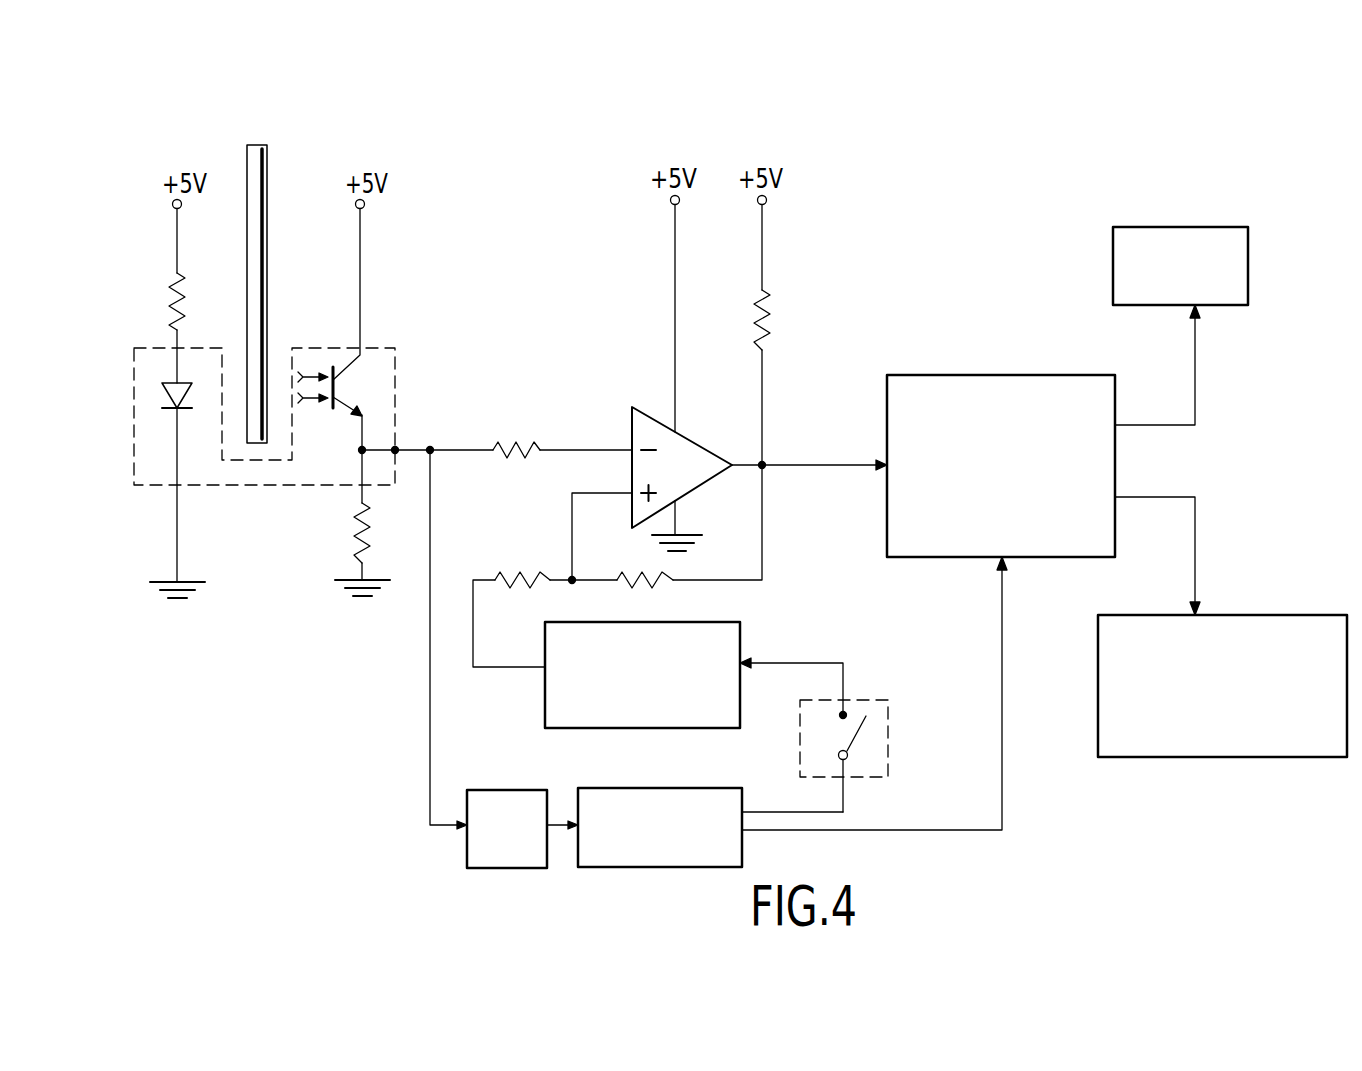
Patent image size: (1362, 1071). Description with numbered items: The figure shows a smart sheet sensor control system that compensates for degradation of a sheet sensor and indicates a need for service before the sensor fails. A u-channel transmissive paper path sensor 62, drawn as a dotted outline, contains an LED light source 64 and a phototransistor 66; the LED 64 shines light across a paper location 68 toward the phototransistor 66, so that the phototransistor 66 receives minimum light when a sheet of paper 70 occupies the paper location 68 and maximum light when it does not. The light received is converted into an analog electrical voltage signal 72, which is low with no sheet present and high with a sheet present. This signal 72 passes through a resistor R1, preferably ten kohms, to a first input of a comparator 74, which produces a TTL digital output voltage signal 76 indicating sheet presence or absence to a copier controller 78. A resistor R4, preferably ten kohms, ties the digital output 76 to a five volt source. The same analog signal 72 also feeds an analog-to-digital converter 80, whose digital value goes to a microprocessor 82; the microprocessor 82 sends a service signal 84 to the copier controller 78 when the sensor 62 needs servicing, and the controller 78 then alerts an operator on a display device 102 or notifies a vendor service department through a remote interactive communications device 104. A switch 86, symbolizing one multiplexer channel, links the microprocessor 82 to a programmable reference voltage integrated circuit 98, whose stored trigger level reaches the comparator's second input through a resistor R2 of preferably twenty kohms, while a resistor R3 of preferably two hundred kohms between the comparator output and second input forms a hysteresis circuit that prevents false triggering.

The u-channel transmissive paper path sensor 62 is at (160, 487).
The LED light source 64 is at (170, 397).
The phototransistor 66 is at (352, 385).
The paper location 68 is at (276, 352).
The sheet of paper 70 is at (260, 145).
The analog electrical voltage signal 72 is at (430, 448).
The comparator 74 is at (632, 412).
The digital output voltage signal 76 is at (763, 464).
The copier controller 78 is at (976, 375).
The analog-to-digital converter 80 is at (495, 868).
The microprocessor 82 is at (663, 868).
The service signal 84 is at (1002, 693).
The switch 86 is at (890, 745).
The programmable reference voltage I.C. 98 is at (740, 630).
The display device 102 is at (1172, 227).
The remote interactive communications device 104 is at (1265, 615).
The resistor R1 is at (562, 433).
The resistor R2 is at (522, 604).
The resistor R3 is at (621, 564).
The resistor R4 is at (782, 335).